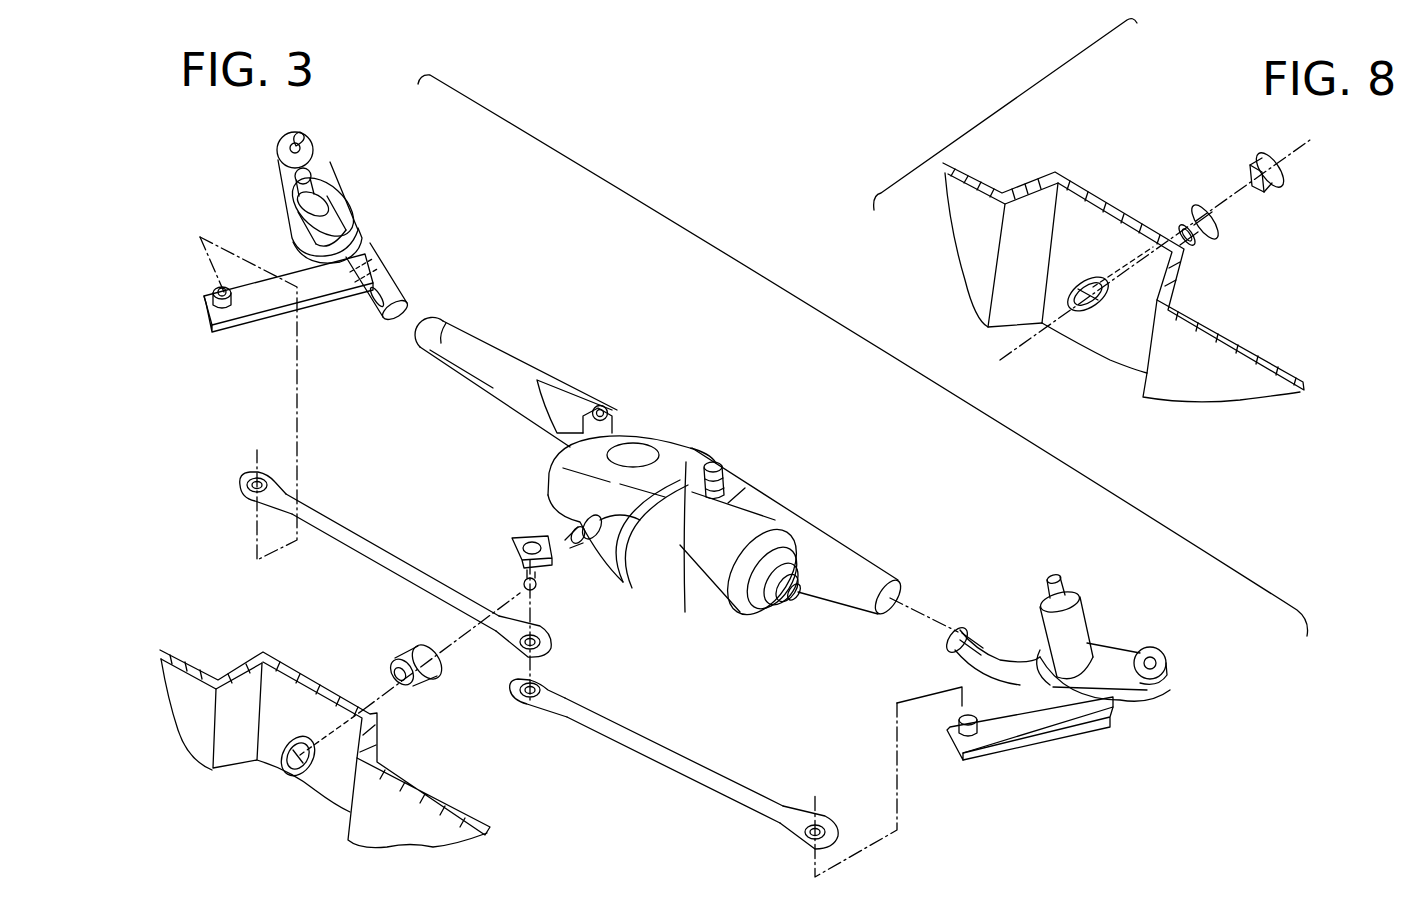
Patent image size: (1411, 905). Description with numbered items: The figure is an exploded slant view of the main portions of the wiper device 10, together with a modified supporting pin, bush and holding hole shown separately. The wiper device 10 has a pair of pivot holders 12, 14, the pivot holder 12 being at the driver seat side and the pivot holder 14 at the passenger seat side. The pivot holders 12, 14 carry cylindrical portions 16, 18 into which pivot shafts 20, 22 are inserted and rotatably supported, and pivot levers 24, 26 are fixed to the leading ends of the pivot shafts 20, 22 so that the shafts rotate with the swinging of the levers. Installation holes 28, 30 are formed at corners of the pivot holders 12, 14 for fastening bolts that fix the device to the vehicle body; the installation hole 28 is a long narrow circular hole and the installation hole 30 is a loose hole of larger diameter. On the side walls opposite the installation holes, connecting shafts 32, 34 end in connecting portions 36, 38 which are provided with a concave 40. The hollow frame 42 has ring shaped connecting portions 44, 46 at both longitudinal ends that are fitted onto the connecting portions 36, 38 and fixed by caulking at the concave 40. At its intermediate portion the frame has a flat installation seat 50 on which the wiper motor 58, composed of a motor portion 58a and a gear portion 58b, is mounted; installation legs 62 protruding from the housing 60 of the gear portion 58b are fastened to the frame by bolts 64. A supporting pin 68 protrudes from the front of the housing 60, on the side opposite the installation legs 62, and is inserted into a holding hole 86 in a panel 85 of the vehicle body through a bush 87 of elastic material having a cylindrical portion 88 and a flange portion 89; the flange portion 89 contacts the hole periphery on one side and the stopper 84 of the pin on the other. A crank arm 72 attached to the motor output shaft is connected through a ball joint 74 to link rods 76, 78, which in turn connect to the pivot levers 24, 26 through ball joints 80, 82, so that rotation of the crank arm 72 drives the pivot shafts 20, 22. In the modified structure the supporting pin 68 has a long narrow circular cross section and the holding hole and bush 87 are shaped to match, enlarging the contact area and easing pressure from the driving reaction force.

In FIG. 3, the wiper device 10 is at (643, 302).
In FIG. 3, the pivot holder 12 is at (347, 183).
In FIG. 3, the pivot holder 14 is at (1113, 640).
In FIG. 3, the cylindrical portion 16 is at (332, 215).
In FIG. 3, the cylindrical portion 18 is at (1088, 635).
In FIG. 3, the pivot shaft 20 is at (313, 158).
In FIG. 3, the pivot shaft 22 is at (1045, 578).
In FIG. 3, the pivot lever 24 is at (255, 326).
In FIG. 3, the pivot lever 26 is at (1047, 743).
In FIG. 3, the installation hole 28 is at (278, 150).
In FIG. 3, the installation hole 30 is at (1150, 647).
In FIG. 3, the connecting shaft 32 is at (345, 297).
In FIG. 3, the connecting shaft 34 is at (1010, 680).
In FIG. 3, the connecting portion 36 is at (382, 313).
In FIG. 3, the connecting portion 38 is at (963, 633).
In FIG. 3, the concave 40 is at (385, 284).
In FIG. 3, the hollow frame 42 is at (471, 386).
In FIG. 3, the connecting portion 44 is at (440, 330).
In FIG. 3, the connecting portion 46 is at (862, 595).
In FIG. 3, the flat installation seat 50 is at (688, 443).
In FIG. 3, the wiper motor 58 is at (755, 392).
In FIG. 3, the motor portion 58a is at (733, 528).
In FIG. 3, the gear portion 58b is at (689, 443).
In FIG. 3, the housing 60 is at (556, 458).
In FIG. 3, the installation legs 62 is at (632, 420).
In FIG. 3, the bolts 64 is at (606, 405).
In FIG. 3, the supporting pin 68 is at (585, 548).
In FIG. 8, the supporting pin 68 is at (1293, 183).
In FIG. 3, the crank arm 72 is at (547, 530).
In FIG. 3, the ball joint 74 is at (514, 573).
In FIG. 3, the link rod 76 is at (395, 568).
In FIG. 3, the link rod 78 is at (692, 767).
In FIG. 3, the ball joint 80 is at (216, 310).
In FIG. 3, the ball joint 82 is at (950, 735).
In FIG. 3, the stopper 84 is at (655, 560).
In FIG. 3, the panel 85 is at (280, 653).
In FIG. 8, the panel 85 is at (1123, 282).
In FIG. 3, the holding hole 86 is at (300, 768).
In FIG. 8, the holding hole 86 is at (1085, 310).
In FIG. 3, the bush 87 is at (493, 738).
In FIG. 8, the bush 87 is at (1222, 223).
In FIG. 3, the cylindrical portion 88 is at (430, 680).
In FIG. 3, the flange portion 89 is at (443, 680).